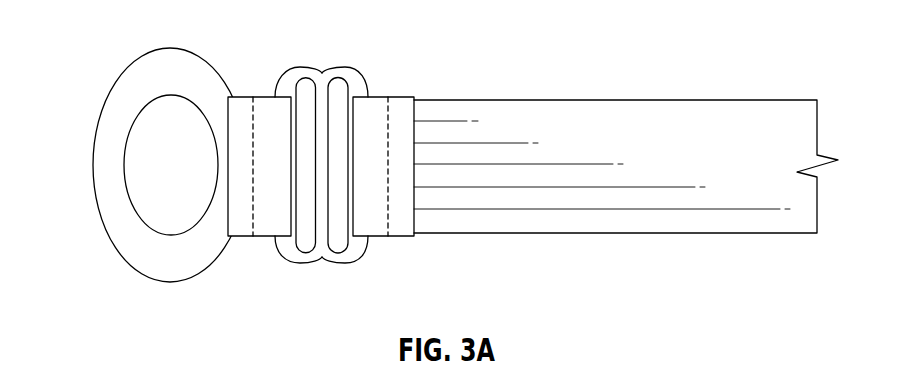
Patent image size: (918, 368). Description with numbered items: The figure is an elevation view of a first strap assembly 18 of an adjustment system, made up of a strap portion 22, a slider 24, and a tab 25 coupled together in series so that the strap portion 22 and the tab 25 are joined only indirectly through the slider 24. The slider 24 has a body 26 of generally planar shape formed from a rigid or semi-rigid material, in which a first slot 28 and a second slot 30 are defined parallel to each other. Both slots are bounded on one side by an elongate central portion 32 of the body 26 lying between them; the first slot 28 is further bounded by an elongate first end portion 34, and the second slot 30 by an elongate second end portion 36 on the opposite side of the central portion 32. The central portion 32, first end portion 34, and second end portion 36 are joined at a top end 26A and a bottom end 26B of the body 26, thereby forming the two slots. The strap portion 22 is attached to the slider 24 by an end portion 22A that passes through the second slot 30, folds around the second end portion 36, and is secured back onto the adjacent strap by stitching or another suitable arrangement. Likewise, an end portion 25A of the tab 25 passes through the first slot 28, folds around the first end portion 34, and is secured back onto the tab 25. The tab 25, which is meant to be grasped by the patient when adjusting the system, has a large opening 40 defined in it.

The first strap assembly 18 is at (498, 56).
The strap portion 22 is at (582, 117).
The end portion of strap portion 22A is at (403, 160).
The slider 24 is at (302, 73).
The tab 25 is at (141, 71).
The end portion of tab 25A is at (243, 175).
The body 26 is at (342, 72).
The top end of body 26A is at (380, 84).
The bottom end of body 26B is at (364, 287).
The first slot 28 is at (297, 75).
The second slot 30 is at (337, 108).
The central portion 32 is at (318, 247).
The first end portion 34 is at (287, 252).
The second end portion 36 is at (357, 252).
The opening 40 is at (137, 175).